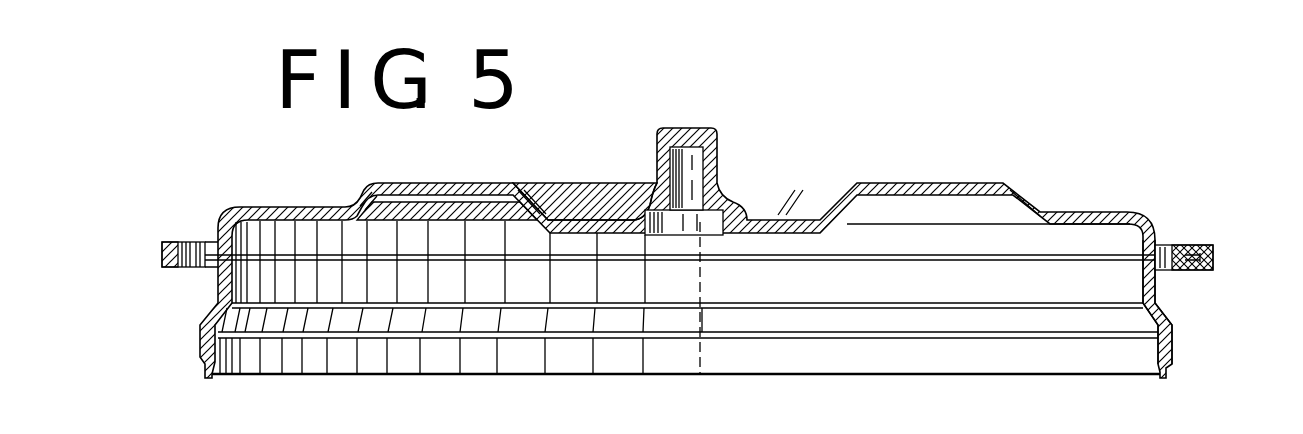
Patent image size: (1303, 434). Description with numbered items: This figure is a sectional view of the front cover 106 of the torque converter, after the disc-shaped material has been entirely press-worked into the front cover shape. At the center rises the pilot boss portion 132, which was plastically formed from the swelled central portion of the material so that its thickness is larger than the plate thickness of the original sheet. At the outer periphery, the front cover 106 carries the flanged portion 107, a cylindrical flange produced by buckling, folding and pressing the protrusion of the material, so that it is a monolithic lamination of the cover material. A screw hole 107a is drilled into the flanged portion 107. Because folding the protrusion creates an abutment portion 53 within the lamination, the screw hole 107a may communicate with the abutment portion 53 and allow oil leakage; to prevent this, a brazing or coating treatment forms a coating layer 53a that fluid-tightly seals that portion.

The abutment portion 53 is at (1143, 260).
The coating layer 53a is at (1180, 272).
The front cover 106 is at (883, 183).
The flanged portion 107 is at (1185, 272).
The screw hole 107a is at (1175, 245).
The pilot boss portion 132 is at (700, 128).